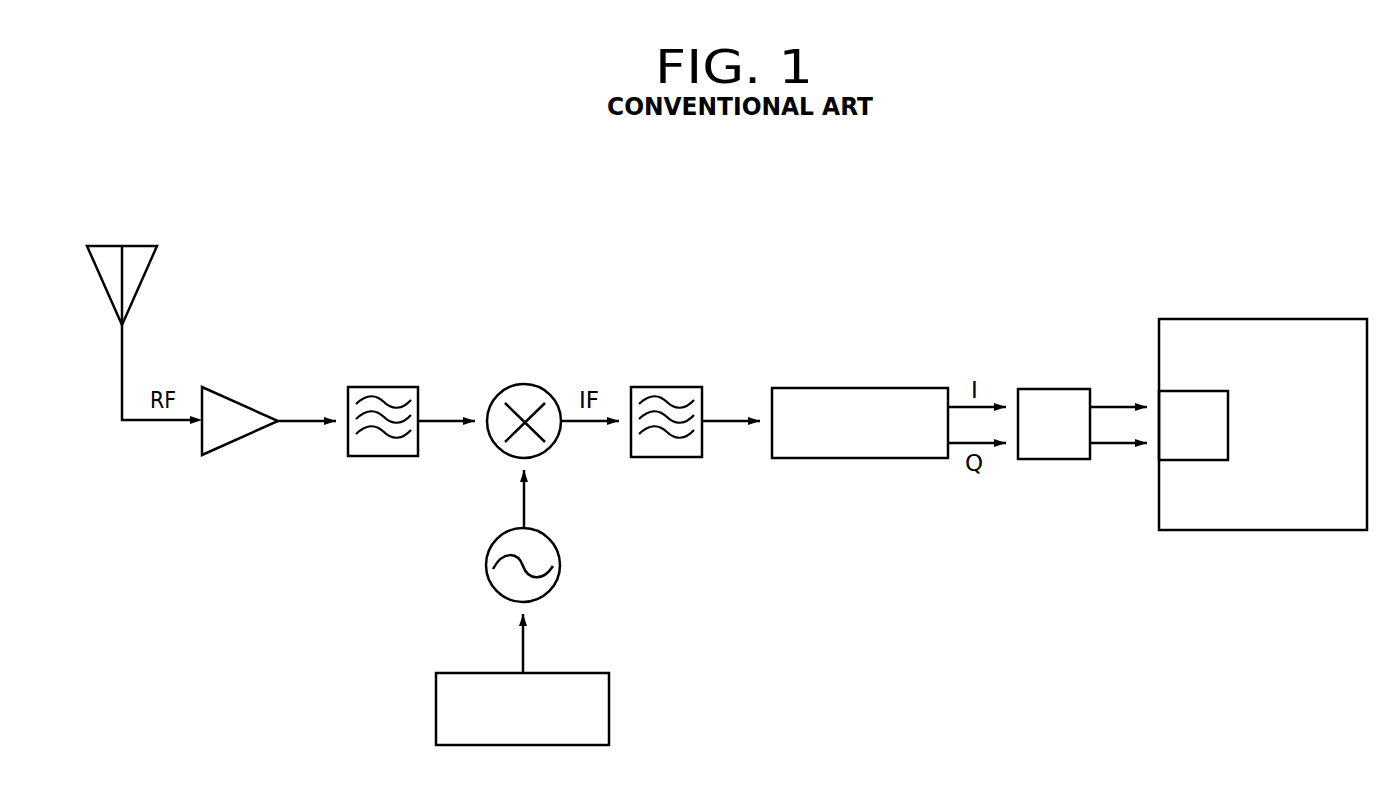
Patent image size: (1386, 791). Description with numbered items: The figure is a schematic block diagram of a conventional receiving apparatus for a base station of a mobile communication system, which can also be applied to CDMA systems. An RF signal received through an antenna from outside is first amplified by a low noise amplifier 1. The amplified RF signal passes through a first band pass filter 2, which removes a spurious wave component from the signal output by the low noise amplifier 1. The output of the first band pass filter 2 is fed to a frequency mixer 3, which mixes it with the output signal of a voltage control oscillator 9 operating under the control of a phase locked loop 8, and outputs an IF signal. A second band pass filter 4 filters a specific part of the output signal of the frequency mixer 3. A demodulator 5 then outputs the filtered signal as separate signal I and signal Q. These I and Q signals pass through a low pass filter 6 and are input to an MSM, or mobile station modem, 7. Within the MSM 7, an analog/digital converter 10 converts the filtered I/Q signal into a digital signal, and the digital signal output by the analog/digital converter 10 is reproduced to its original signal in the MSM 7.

The low noise amplifier 1 is at (242, 438).
The first band pass filter 2 is at (383, 456).
The frequency mixer 3 is at (550, 450).
The second band pass filter 4 is at (667, 457).
The demodulator 5 is at (862, 458).
The low pass filter 6 is at (1057, 459).
The MSM (mobile station modem) 7 is at (1262, 530).
The phase locked loop 8 is at (609, 708).
The voltage control oscillator 9 is at (560, 562).
The analog/digital converter 10 is at (1195, 460).